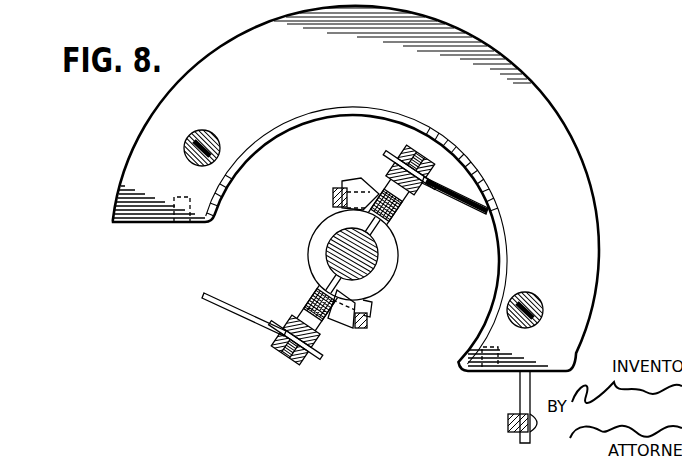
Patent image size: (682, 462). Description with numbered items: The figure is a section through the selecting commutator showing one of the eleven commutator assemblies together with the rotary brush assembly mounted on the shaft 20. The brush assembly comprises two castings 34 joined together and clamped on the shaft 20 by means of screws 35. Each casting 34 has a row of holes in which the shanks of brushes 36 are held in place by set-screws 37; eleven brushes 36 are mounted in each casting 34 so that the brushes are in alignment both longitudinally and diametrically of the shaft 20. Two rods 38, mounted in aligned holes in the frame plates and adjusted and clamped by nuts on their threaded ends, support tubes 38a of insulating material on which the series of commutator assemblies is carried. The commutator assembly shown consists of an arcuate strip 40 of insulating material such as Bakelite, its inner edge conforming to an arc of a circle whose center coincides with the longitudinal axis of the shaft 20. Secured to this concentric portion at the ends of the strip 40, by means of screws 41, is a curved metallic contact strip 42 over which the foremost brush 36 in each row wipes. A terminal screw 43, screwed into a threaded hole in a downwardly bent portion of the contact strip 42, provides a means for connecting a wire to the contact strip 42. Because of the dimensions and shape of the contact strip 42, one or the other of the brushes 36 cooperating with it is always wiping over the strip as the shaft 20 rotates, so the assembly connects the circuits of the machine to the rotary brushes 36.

The shaft 20 is at (362, 256).
The castings 34 is at (317, 246).
The screws 35 is at (345, 183).
The brushes 36 is at (443, 183).
The set-screws 37 is at (423, 152).
The rods 38 is at (204, 139).
The tubes 38a is at (218, 136).
The arcuate strip 40 is at (557, 167).
The screws 41 is at (122, 173).
The contact strip 42 is at (255, 152).
The terminal screw 43 is at (512, 427).